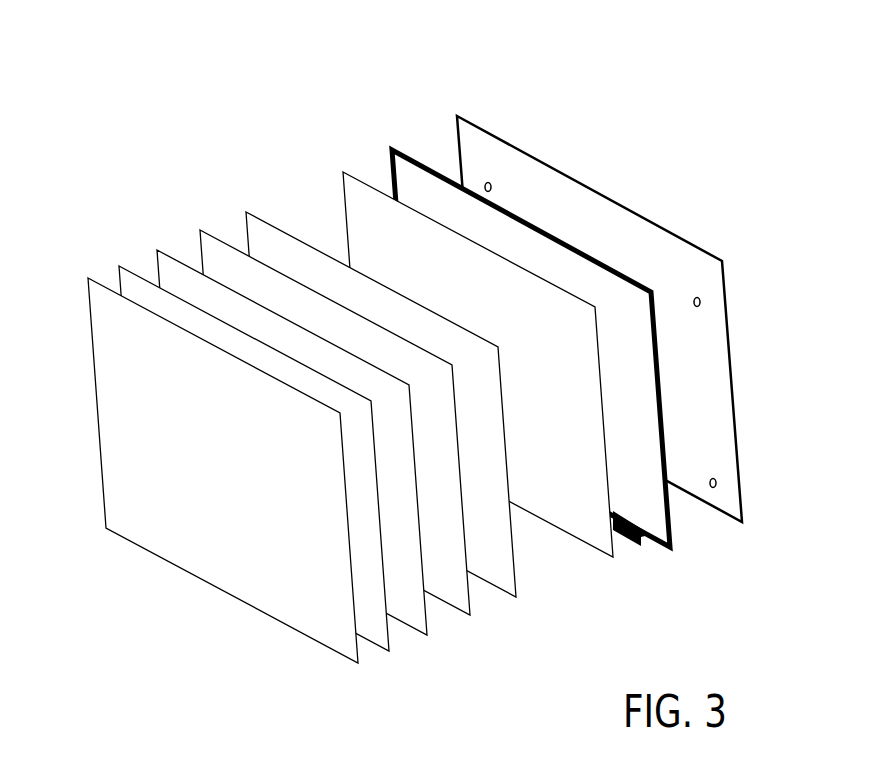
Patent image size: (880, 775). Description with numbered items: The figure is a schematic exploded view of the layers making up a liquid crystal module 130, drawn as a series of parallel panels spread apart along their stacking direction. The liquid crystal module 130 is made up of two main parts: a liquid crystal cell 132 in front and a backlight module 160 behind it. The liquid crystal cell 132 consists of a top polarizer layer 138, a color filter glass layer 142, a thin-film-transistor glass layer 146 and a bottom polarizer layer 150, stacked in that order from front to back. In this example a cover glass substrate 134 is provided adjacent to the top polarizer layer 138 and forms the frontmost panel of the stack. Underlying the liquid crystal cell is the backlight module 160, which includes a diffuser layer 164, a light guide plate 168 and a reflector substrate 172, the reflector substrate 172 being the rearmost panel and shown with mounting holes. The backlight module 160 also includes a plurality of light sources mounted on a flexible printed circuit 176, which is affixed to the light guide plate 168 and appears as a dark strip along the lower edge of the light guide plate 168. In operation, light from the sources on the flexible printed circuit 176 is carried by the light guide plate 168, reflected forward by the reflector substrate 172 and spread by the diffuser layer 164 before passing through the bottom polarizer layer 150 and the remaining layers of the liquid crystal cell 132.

The liquid crystal module 130 is at (172, 85).
The liquid crystal cell 132 is at (155, 217).
The cover glass substrate 134 is at (335, 643).
The top polarizer layer 138 is at (382, 643).
The color filter glass layer 142 is at (420, 632).
The thin-film-transistor (TFT) glass layer 146 is at (460, 608).
The bottom polarizer layer 150 is at (507, 588).
The backlight module 160 is at (373, 120).
The diffuser layer 164 is at (588, 535).
The light guide plate 168 is at (660, 523).
The reflector substrate 172 is at (728, 508).
The flexible printed circuit 176 is at (625, 540).